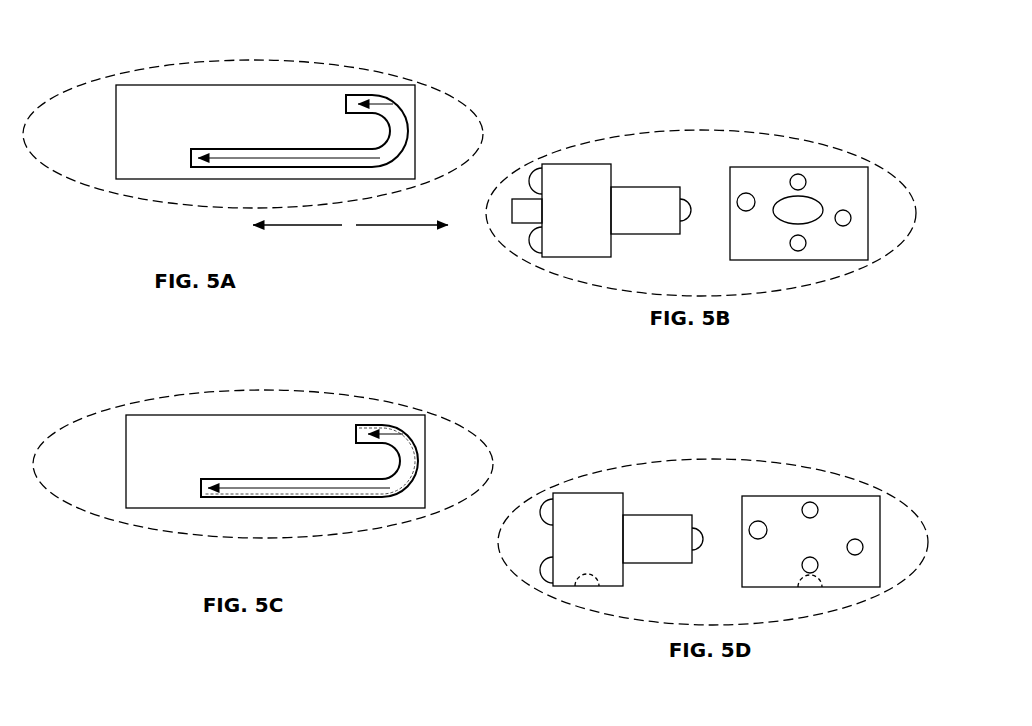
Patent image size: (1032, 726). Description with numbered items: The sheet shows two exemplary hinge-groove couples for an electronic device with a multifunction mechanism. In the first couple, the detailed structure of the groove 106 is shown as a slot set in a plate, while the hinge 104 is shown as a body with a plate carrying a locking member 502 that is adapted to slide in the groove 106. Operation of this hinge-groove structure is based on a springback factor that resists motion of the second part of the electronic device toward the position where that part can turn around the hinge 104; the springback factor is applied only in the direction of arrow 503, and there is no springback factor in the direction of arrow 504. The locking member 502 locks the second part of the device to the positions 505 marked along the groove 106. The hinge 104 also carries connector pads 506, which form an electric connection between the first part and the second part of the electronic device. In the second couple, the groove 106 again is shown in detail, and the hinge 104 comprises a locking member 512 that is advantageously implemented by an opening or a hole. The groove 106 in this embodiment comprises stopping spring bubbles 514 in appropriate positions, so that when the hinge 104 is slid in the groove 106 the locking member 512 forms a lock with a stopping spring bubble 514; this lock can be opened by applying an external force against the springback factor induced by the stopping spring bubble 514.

In FIG. 5B, the hinge 104 is at (701, 197).
In FIG. 5D, the hinge 104 is at (713, 542).
In FIG. 5A, the groove 106 is at (183, 172).
In FIG. 5C, the groove 106 is at (193, 500).
In FIG. 5B, the locking member 502 is at (822, 230).
In FIG. 5A, the arrow 503 is at (402, 239).
In FIG. 5A, the arrow 504 is at (297, 240).
In FIG. 5A, the positions 505 is at (347, 92).
In FIG. 5B, the connector pads 506 is at (762, 195).
In FIG. 5D, the connector pads 506 is at (773, 522).
In FIG. 5D, the locking member 512 is at (815, 600).
In FIG. 5C, the stopping spring bubbles 514 is at (372, 422).